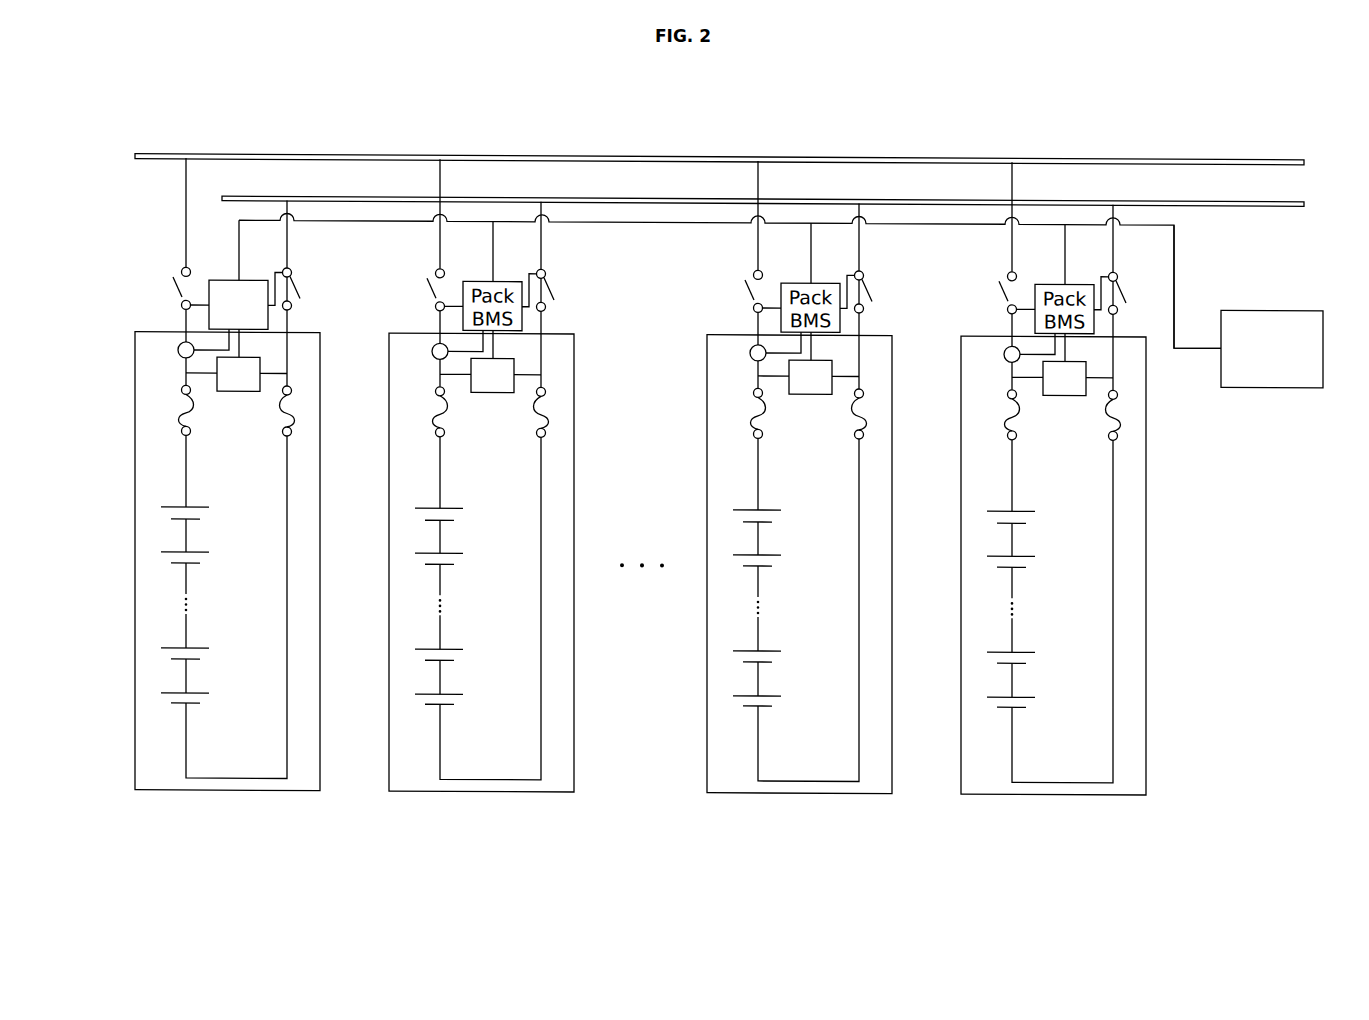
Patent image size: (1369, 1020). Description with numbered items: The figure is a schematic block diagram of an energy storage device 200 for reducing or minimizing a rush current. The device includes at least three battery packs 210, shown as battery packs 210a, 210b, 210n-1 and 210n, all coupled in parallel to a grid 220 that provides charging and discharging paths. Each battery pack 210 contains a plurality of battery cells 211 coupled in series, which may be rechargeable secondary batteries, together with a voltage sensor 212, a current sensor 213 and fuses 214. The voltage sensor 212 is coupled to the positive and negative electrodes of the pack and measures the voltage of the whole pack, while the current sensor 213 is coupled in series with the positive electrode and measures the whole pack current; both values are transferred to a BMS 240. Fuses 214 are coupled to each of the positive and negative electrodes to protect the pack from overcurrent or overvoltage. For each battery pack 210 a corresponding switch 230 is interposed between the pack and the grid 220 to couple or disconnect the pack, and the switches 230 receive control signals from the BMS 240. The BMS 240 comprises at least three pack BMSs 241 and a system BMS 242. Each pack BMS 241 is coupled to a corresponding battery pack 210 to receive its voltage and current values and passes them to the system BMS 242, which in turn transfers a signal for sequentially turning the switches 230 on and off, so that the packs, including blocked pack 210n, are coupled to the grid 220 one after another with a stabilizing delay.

The energy storage device 200 is at (1315, 128).
The battery packs 210 is at (208, 850).
The battery pack 210a is at (226, 791).
The battery pack 210b is at (480, 791).
The battery pack 210n-1 is at (798, 791).
The battery pack 210n is at (1052, 791).
The battery cells 211 is at (178, 511).
The voltage sensor 212 is at (256, 392).
The current sensor 213 is at (177, 349).
The fuse 214 is at (178, 414).
The grid 220 is at (500, 197).
The switch 230 is at (172, 280).
The BMS 240 is at (1286, 440).
The pack BMS 241 is at (1097, 321).
The system BMS 242 is at (1270, 383).